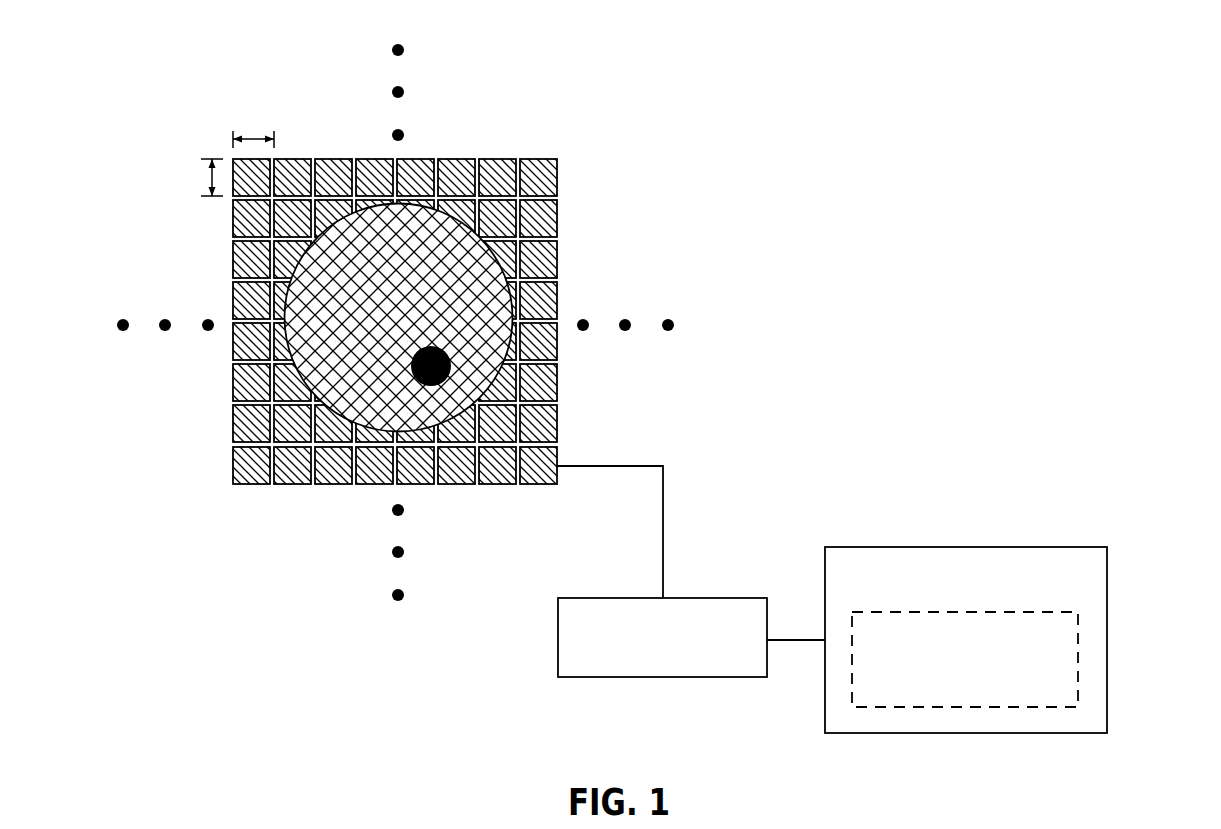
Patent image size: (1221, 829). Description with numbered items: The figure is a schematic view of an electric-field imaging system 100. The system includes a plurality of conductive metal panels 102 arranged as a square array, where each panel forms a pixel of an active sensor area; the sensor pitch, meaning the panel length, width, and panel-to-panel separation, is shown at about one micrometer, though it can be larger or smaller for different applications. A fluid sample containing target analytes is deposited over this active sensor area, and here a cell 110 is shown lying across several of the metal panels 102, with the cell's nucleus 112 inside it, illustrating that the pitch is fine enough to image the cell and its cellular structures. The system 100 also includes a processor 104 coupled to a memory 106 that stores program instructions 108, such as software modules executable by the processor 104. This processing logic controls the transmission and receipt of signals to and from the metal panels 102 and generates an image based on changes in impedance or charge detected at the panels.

The electric-field imaging system 100 is at (146, 70).
The conductive metal panels 102 is at (539, 158).
The processor 104 is at (572, 598).
The memory 106 is at (1093, 547).
The program instructions 108 is at (1078, 658).
The cell 110 is at (503, 277).
The nucleus 112 is at (450, 371).